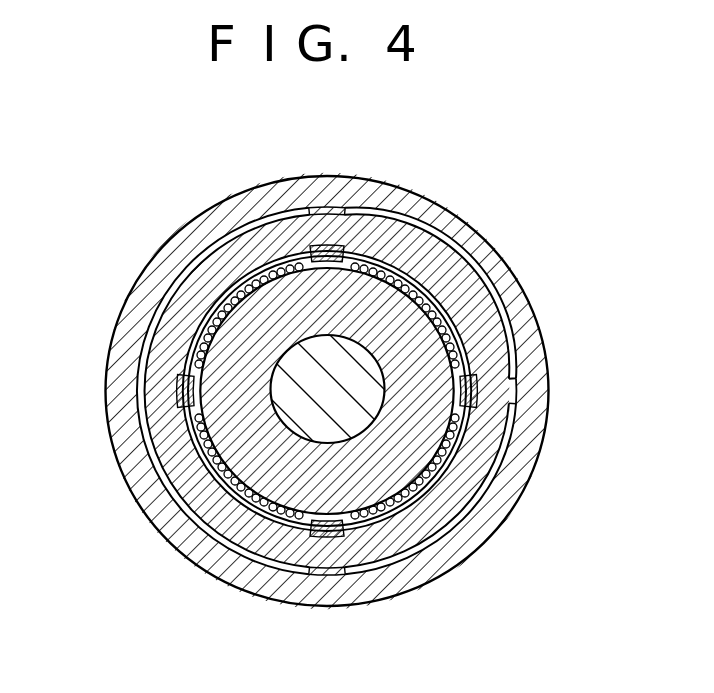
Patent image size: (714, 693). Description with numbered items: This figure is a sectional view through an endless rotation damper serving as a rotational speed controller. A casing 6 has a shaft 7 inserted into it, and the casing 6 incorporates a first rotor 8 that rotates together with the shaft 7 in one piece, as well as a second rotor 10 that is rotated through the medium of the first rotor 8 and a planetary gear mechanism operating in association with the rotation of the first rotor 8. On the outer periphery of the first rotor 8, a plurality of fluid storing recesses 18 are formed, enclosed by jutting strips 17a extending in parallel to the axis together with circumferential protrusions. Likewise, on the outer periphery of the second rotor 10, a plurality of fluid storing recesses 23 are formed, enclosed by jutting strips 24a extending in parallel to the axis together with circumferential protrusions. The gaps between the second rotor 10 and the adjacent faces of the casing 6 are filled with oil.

The casing 6 is at (307, 193).
The shaft 7 is at (290, 389).
The first rotor 8 is at (277, 230).
The second rotor 10 is at (205, 462).
The jutting strip 17a is at (332, 207).
The fluid storing recess 18 is at (223, 242).
The fluid storing recess 23 is at (207, 333).
The jutting strip 24a is at (323, 540).